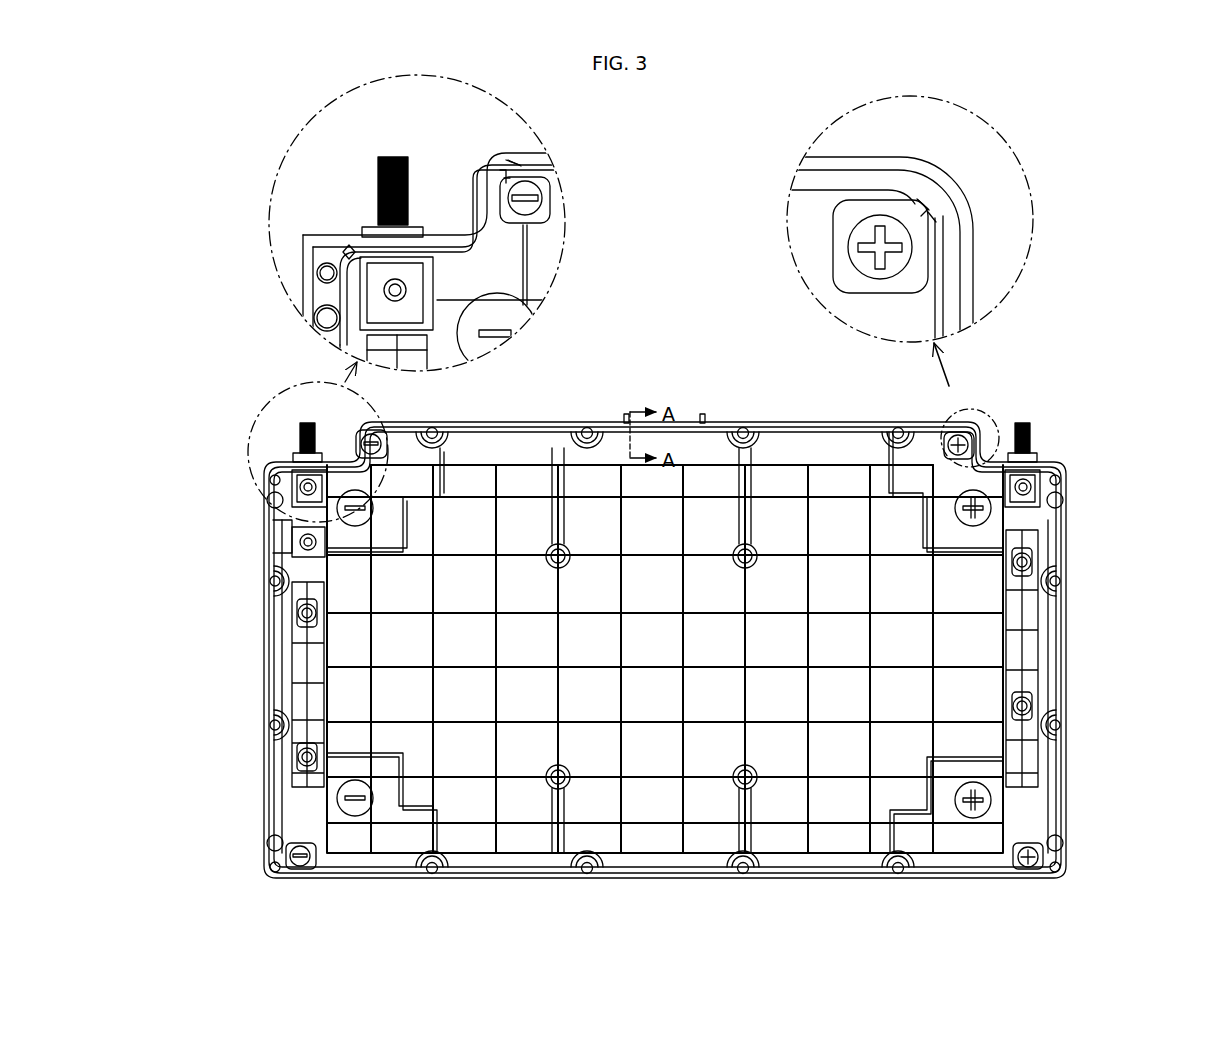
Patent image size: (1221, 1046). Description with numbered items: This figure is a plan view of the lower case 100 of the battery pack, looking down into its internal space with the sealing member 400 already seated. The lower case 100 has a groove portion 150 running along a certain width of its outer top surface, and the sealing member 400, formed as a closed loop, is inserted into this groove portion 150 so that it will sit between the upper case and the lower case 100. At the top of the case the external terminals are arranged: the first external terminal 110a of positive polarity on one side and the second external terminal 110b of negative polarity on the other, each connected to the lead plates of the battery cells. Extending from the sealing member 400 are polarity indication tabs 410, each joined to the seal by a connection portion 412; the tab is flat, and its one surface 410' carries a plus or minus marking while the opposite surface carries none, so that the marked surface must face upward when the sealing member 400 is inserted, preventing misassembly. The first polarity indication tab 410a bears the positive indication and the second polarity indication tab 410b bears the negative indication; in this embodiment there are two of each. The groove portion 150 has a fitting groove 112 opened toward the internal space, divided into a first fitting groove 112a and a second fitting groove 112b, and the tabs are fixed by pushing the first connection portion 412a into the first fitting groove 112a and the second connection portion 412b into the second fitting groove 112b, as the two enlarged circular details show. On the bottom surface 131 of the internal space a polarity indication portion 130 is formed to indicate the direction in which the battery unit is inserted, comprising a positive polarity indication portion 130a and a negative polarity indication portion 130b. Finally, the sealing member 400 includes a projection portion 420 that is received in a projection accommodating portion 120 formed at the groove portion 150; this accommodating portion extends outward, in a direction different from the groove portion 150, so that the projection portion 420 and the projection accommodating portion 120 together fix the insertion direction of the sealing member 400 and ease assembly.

The lower case 100 is at (238, 645).
The first external terminal 110a is at (1035, 440).
The second external terminal 110b is at (298, 428).
The fitting groove 112 is at (514, 163).
The first fitting groove 112a is at (937, 223).
The second fitting groove 112b is at (514, 170).
The projection accommodating portion 120 is at (336, 256).
The polarity indication portion 130 is at (345, 798).
The positive polarity indication portion 130a is at (982, 513).
The negative polarity indication portion 130b is at (325, 530).
The bottom surface 131 is at (990, 650).
The groove portion 150 is at (850, 419).
The sealing member 400 is at (523, 421).
The polarity indication tab 410 is at (234, 855).
The first polarity indication tab 410a is at (961, 440).
The second polarity indication tab 410b is at (372, 444).
The one surface 410' is at (839, 248).
The connection portion 412 is at (923, 204).
The first connection portion 412a is at (924, 206).
The second connection portion 412b is at (500, 178).
The projection portion 420 is at (347, 248).